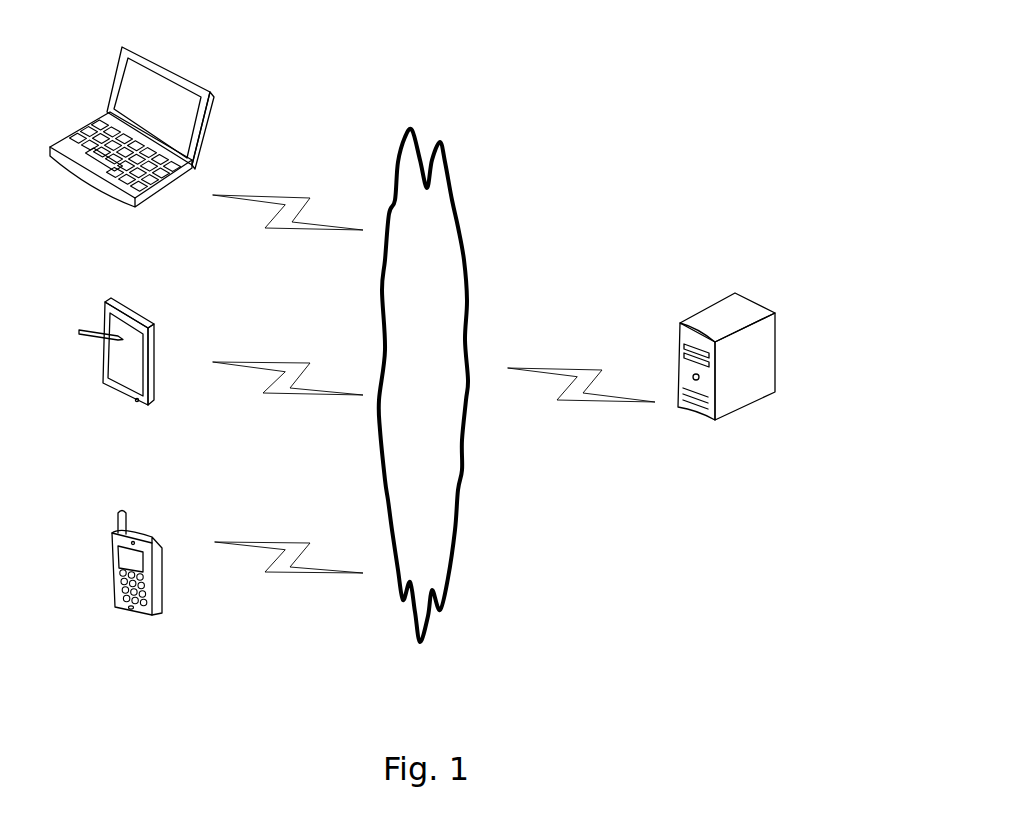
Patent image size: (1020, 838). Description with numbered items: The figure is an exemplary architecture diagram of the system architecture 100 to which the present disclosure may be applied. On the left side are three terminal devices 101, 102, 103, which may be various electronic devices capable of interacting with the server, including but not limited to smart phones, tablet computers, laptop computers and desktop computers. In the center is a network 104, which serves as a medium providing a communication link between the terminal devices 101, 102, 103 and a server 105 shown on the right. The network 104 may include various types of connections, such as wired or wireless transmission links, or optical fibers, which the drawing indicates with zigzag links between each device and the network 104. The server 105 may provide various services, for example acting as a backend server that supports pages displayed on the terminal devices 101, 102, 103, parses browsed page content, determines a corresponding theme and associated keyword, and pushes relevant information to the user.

The system architecture 100 is at (682, 37).
The terminal device 101 is at (137, 585).
The terminal device 102 is at (116, 373).
The terminal device 103 is at (132, 147).
The network 104 is at (423, 385).
The server 105 is at (726, 381).